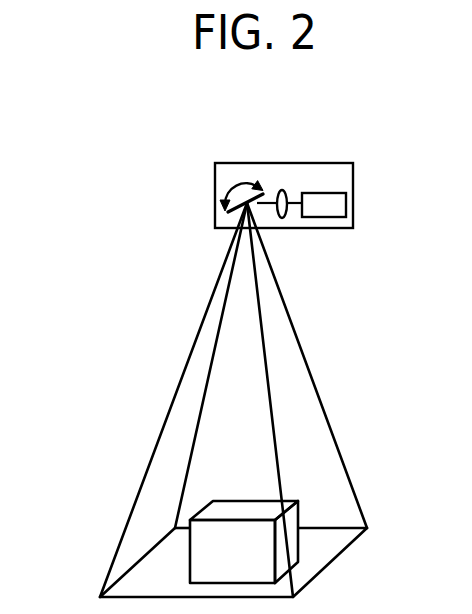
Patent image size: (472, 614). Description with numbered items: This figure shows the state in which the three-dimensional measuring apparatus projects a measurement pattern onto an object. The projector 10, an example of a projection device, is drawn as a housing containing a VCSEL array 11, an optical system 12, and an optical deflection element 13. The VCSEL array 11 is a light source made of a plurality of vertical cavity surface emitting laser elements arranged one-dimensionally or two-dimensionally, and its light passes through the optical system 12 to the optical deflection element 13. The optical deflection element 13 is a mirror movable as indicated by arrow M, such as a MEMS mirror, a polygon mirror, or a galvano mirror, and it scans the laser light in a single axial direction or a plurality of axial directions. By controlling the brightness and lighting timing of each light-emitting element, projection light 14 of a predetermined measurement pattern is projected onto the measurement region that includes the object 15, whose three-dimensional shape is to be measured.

The projector 10 is at (333, 163).
The VCSEL array 11 is at (323, 192).
The optical system 12 is at (282, 191).
The optical deflection element 13 is at (227, 213).
The arrow M is at (235, 184).
The projection light 14 is at (333, 560).
The object 15 is at (190, 552).